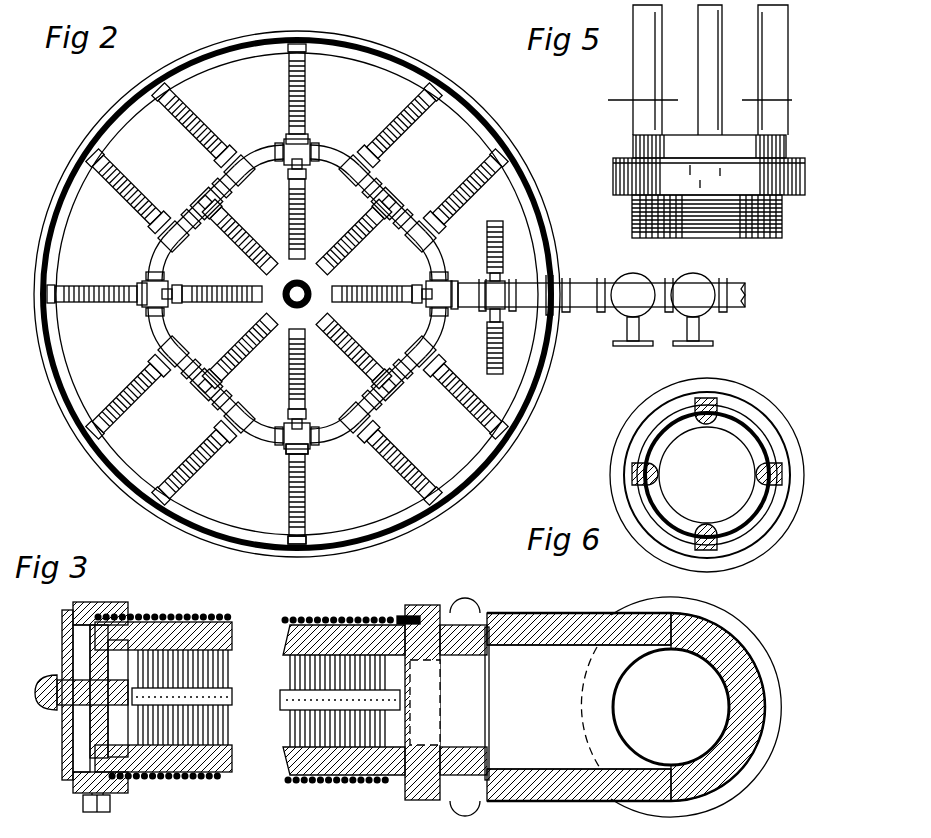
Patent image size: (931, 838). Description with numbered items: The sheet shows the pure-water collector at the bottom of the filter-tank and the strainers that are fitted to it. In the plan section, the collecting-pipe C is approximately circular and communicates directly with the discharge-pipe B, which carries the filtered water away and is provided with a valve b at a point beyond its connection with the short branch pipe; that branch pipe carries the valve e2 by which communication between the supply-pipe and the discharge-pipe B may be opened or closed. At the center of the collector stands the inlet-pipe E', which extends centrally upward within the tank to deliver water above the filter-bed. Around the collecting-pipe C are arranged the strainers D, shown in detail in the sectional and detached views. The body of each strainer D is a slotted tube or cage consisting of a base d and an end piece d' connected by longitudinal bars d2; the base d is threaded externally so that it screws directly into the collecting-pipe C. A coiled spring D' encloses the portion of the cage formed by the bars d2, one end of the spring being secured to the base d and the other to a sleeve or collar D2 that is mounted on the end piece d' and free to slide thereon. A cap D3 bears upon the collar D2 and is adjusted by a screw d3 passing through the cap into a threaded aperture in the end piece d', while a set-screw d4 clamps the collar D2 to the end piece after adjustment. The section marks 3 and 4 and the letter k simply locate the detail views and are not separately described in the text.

In FIG. 2, the inlet-pipe E' is at (308, 258).
In FIG. 2, the collecting-pipe C is at (407, 235).
In FIG. 3, the collecting-pipe C is at (615, 707).
In FIG. 2, the section line 3 is at (207, 393).
In FIG. 2, the outer radiating tube k is at (257, 417).
In FIG. 2, the coiled spring D' is at (357, 453).
In FIG. 3, the coiled spring D' is at (351, 683).
In FIG. 2, the strainer D is at (338, 446).
In FIG. 3, the strainer D is at (451, 672).
In FIG. 5, the strainer D is at (690, 186).
In FIG. 6, the strainer D is at (691, 475).
In FIG. 2, the base d is at (297, 440).
In FIG. 3, the base d is at (422, 720).
In FIG. 2, the end piece d' is at (317, 527).
In FIG. 3, the end piece d' is at (85, 731).
In FIG. 2, the discharge-pipe B is at (574, 290).
In FIG. 2, the valve e2 is at (632, 328).
In FIG. 2, the valve b is at (709, 318).
In FIG. 3, the sleeve or collar D2 is at (110, 608).
In FIG. 3, the screw d3 is at (70, 685).
In FIG. 3, the cap D3 is at (68, 770).
In FIG. 3, the set-screw d4 is at (110, 805).
In FIG. 3, the longitudinal bars d2 is at (283, 768).
In FIG. 5, the longitudinal bars d2 is at (710, 70).
In FIG. 6, the longitudinal bars d2 is at (753, 476).
In FIG. 5, the section line 4 is at (702, 98).